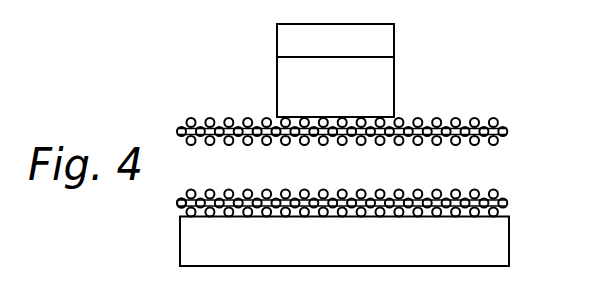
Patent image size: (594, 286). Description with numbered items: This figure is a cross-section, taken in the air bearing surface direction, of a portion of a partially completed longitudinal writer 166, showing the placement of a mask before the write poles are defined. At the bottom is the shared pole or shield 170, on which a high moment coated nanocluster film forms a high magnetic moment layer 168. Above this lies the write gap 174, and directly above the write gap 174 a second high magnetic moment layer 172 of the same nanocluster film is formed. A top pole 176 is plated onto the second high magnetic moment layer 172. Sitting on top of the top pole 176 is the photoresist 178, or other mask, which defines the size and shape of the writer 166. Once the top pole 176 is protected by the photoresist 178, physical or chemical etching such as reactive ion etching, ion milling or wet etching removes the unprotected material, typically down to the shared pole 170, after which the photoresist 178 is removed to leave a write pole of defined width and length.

The writer 166 is at (158, 211).
The high magnetic moment layer 168 is at (507, 202).
The shared pole 170 is at (490, 250).
The second high magnetic moment layer 172 is at (508, 131).
The write gap 174 is at (468, 170).
The top pole 176 is at (387, 88).
The photoresist 178 is at (373, 32).